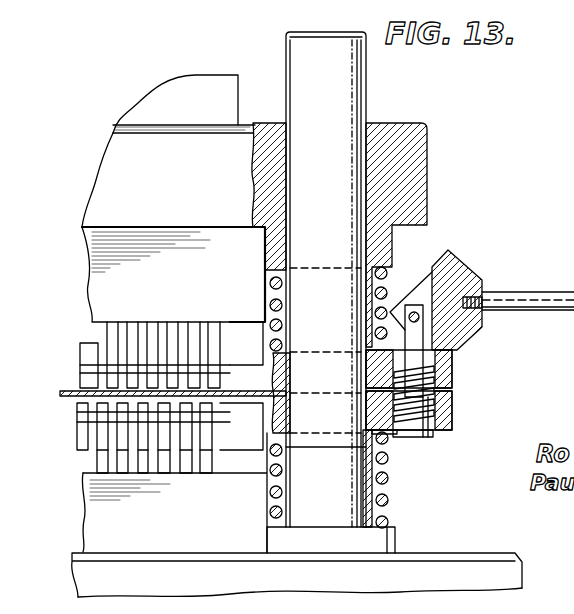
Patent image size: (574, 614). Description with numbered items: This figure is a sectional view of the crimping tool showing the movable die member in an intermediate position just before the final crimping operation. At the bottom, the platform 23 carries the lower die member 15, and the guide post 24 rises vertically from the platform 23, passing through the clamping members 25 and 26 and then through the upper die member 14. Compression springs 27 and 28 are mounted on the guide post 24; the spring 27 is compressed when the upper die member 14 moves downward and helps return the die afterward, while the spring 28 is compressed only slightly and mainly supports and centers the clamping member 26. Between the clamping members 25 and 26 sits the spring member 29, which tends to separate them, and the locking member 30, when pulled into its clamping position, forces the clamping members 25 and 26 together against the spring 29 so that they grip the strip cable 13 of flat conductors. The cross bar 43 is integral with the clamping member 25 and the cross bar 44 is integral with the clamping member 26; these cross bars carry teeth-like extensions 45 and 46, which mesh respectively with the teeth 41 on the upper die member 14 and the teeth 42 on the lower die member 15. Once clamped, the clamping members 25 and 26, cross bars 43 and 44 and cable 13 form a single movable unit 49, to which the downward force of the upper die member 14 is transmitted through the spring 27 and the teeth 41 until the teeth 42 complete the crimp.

The strip cable 13 is at (70, 392).
The upper die member 14 is at (173, 198).
The lower die member 15 is at (174, 492).
The platform 23 is at (457, 565).
The guide post 24 is at (362, 72).
The clamping member 25 is at (452, 363).
The clamping member 26 is at (452, 411).
The compression spring 27 is at (386, 273).
The compression spring 28 is at (400, 505).
The spring member 29 is at (452, 390).
The locking member 30 is at (448, 263).
The teeth-like extensions 41 is at (160, 348).
The teeth-like extensions 42 is at (150, 435).
The cross bar 43 is at (242, 355).
The cross bar 44 is at (243, 447).
The teeth-like extensions 45 is at (212, 365).
The teeth-like extensions 46 is at (80, 432).
The movable unit 49 is at (393, 432).